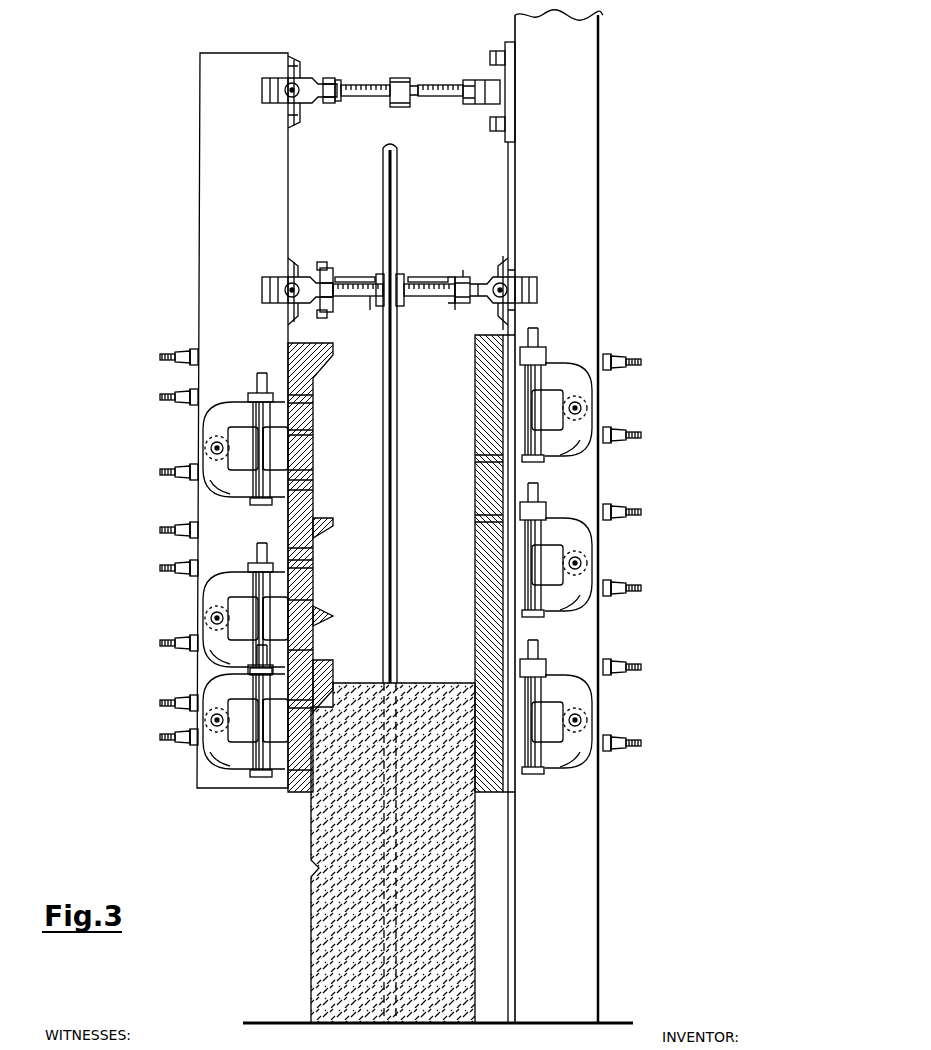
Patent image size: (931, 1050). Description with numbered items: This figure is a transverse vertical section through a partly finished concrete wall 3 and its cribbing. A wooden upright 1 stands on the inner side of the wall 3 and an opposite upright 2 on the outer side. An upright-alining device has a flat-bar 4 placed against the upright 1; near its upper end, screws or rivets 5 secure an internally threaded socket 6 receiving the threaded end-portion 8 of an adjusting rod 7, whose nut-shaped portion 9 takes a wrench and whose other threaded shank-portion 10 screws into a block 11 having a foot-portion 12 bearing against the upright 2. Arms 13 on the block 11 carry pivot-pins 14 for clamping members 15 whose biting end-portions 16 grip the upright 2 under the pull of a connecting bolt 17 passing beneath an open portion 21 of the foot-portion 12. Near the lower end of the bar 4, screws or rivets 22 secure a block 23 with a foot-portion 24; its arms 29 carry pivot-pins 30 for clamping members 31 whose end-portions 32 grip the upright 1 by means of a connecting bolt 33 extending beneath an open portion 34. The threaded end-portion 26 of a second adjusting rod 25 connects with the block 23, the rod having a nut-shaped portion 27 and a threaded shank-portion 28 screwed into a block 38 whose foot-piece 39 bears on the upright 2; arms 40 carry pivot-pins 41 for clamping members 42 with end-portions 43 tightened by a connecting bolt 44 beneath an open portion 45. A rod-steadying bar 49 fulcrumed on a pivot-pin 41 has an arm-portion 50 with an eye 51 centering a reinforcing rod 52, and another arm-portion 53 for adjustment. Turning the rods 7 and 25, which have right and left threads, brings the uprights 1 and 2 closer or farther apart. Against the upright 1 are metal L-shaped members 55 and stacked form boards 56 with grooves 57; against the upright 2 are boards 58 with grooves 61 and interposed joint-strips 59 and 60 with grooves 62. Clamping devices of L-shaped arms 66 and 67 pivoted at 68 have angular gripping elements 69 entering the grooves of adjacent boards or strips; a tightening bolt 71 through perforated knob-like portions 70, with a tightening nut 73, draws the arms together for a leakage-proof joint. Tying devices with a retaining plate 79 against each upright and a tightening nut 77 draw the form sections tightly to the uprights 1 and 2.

The uprights 1 is at (583, 172).
The uprights 2 is at (199, 208).
The wall or structure 3 is at (418, 690).
The plate-like member or flat-bar 4 is at (507, 186).
The screws or rivets 5 is at (490, 58).
The internally screw-threaded socket 6 is at (478, 104).
The adjusting rod 7 is at (417, 86).
The screw-threaded end-portion 8 is at (437, 85).
The nut-shaped portion 9 is at (400, 78).
The screw-threaded shank-portion 10 is at (372, 85).
The block 11 is at (310, 82).
The foot-portion 12 is at (297, 62).
The oppositely projecting arms 13 is at (342, 82).
The pivot-pins 14 is at (331, 78).
The vise or clamping members 15 is at (300, 108).
The clamping or biting end-portions 16 is at (262, 92).
The connecting bolt 17 is at (288, 96).
The open portion 21 is at (286, 68).
The screws or rivets 22 is at (500, 270).
The block 23 is at (478, 302).
The foot-portion 24 is at (506, 262).
The adjusting rod 25 is at (430, 271).
The screw-threaded end-portion 26 is at (452, 277).
The nut-shaped portion 27 is at (428, 297).
The screw-threaded shank-portion 28 is at (372, 310).
The oppositely projecting arms 29 is at (462, 270).
The pivot-pins 30 is at (472, 275).
The vise or clamping members 31 is at (480, 304).
The clamping or biting end-portions 32 is at (540, 293).
The connecting bolt 33 is at (508, 286).
The open portion 34 is at (514, 272).
The block 38 is at (310, 305).
The foot-piece 39 is at (300, 278).
The oppositely projecting arms 40 is at (350, 297).
The pivot-pins 41 is at (334, 270).
The vise or clamping members 42 is at (326, 268).
The clamping or biting end-portions 43 is at (262, 291).
The connecting bolt 44 is at (288, 296).
The open portion 45 is at (286, 272).
The rod-steadying bar or plate 49 is at (364, 271).
The arm-portion 50 is at (378, 274).
The eye 51 is at (404, 274).
The reinforcing rod 52 is at (400, 155).
The arm-portion 53 is at (320, 262).
The angular or L-shaped members 55 is at (532, 338).
The form-sections or members 56 is at (475, 385).
The rabbets, grooves, or channels 57 is at (475, 456).
The form-sections or members 58 is at (318, 616).
The joint-strip 59 is at (318, 540).
The joint-strip 60 is at (333, 352).
The rabbets, grooves, or channels 61 is at (313, 476).
The rabbets, grooves, or channels 62 is at (290, 370).
The L-shaped member or arm 66 is at (240, 410).
The L-shaped member or arm 67 is at (226, 495).
The pivotal connection 68 is at (205, 446).
The gripping elements 69 is at (313, 432).
The perforated knob-like portions 70 is at (551, 783).
The tightening bolt 71 is at (413, 566).
The tightening nut 73 is at (250, 392).
The tightening nut 77 is at (178, 354).
The plate 79 is at (188, 395).